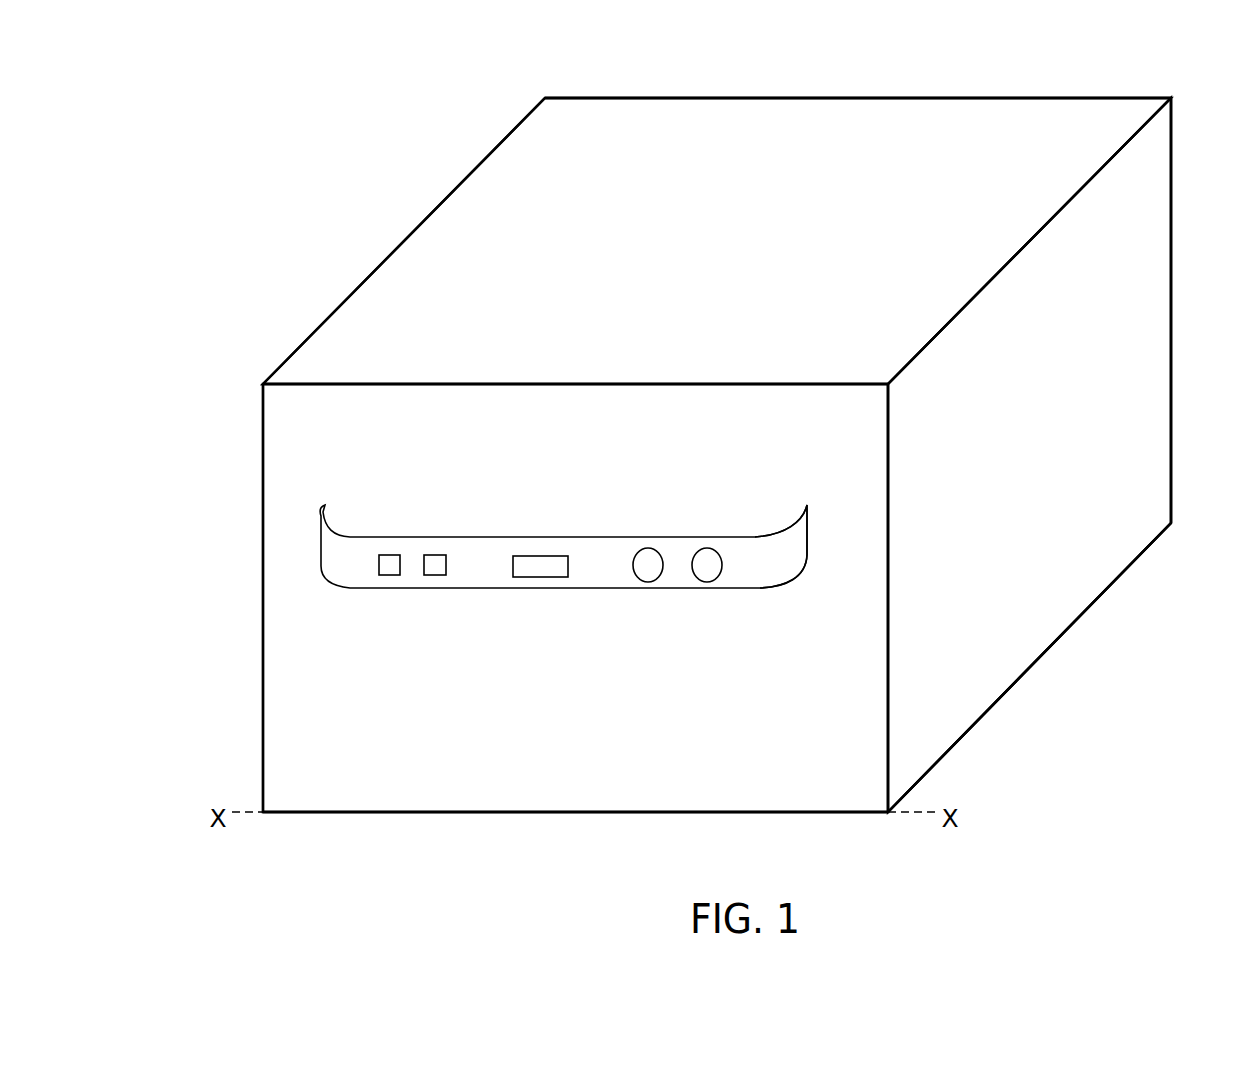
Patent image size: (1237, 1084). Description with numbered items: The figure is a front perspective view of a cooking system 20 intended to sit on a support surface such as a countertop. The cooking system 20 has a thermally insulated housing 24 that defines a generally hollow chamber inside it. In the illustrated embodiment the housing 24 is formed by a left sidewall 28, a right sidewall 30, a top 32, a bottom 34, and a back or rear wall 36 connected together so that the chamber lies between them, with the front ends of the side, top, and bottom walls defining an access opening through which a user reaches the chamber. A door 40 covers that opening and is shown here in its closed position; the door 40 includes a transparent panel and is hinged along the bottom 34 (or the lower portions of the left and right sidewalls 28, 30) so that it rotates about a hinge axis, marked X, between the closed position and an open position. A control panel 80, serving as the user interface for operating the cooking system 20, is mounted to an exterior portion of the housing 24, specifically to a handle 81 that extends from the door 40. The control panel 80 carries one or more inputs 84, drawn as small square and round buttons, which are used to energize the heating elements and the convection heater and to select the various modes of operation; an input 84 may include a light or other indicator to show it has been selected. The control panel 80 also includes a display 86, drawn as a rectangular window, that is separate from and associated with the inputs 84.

The cooking system 20 is at (201, 181).
The thermally insulated housing 24 is at (348, 322).
The left sidewall 28 is at (263, 493).
The right sidewall 30 is at (1063, 607).
The top 32 is at (862, 110).
The bottom 34 is at (985, 713).
The back or rear wall 36 is at (1171, 258).
The door 40 is at (547, 802).
The control panel 80 is at (303, 553).
The handle 81 is at (793, 548).
The inputs 84 is at (432, 573).
The display 86 is at (535, 571).